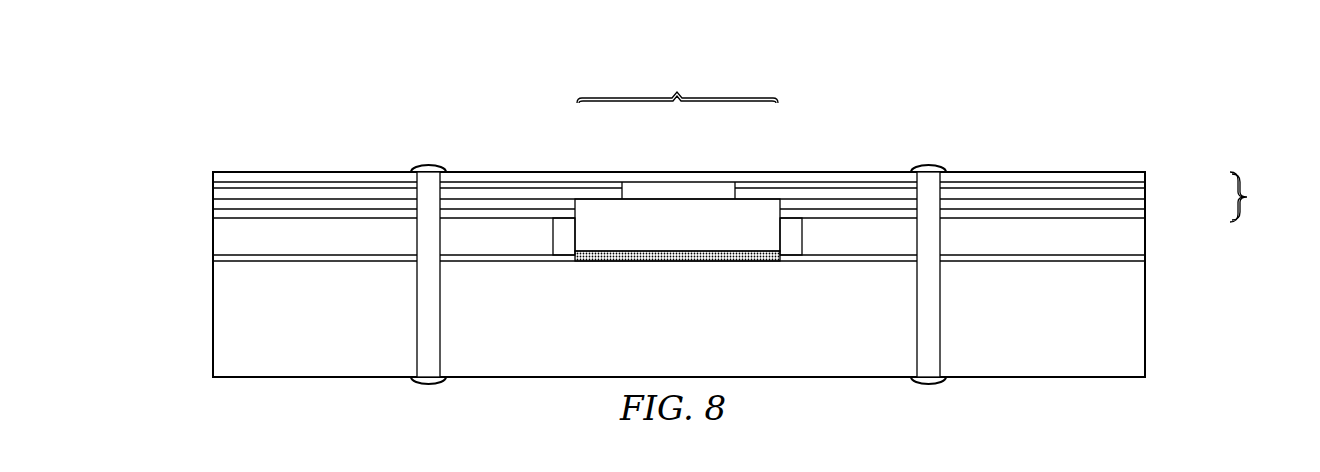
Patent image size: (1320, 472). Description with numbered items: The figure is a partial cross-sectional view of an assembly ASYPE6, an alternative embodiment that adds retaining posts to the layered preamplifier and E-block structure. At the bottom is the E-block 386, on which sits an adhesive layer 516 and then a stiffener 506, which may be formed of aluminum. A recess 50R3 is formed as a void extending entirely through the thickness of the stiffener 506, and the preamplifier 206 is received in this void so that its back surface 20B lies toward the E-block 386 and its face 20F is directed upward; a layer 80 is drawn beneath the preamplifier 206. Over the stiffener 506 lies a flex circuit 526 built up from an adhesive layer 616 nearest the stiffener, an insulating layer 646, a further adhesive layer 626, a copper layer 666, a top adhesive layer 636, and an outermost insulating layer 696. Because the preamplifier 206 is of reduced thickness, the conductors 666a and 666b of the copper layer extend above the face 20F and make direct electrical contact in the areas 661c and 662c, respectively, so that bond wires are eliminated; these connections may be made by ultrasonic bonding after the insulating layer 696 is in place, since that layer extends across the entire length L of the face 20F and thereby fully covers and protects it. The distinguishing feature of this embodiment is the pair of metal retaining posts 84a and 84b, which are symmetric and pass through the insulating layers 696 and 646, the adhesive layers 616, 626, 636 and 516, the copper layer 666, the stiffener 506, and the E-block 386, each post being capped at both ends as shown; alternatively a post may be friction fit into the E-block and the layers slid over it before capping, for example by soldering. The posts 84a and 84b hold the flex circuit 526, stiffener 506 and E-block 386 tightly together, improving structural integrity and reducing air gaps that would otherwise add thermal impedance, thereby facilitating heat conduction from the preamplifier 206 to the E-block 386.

The E-block 386 is at (693, 359).
The adhesive layer 636 is at (1145, 183).
The adhesive layer 626 is at (1145, 201).
The adhesive layer 616 is at (1145, 220).
The insulating layer 646 is at (217, 211).
The stiffener 506 is at (1170, 262).
The adhesive layer 516 is at (303, 263).
The conductor 666a is at (217, 193).
The contact area 661c is at (593, 194).
The contact area 662c is at (758, 194).
The conductor 666b is at (1042, 193).
The face of preamplifier 20F is at (657, 197).
The preamplifier 206 is at (693, 243).
The back surface of preamplifier 20B is at (723, 257).
The bonding layer 80 is at (632, 263).
The recess 50R3 is at (805, 288).
The retaining post 84a is at (427, 327).
The retaining post 84b is at (928, 323).
The flex circuit 526 is at (1259, 197).
The length L is at (677, 84).
The insulating layer 696 is at (112, 177).
The copper layer 666 is at (112, 195).
The assembly ASYPE6 is at (920, 63).